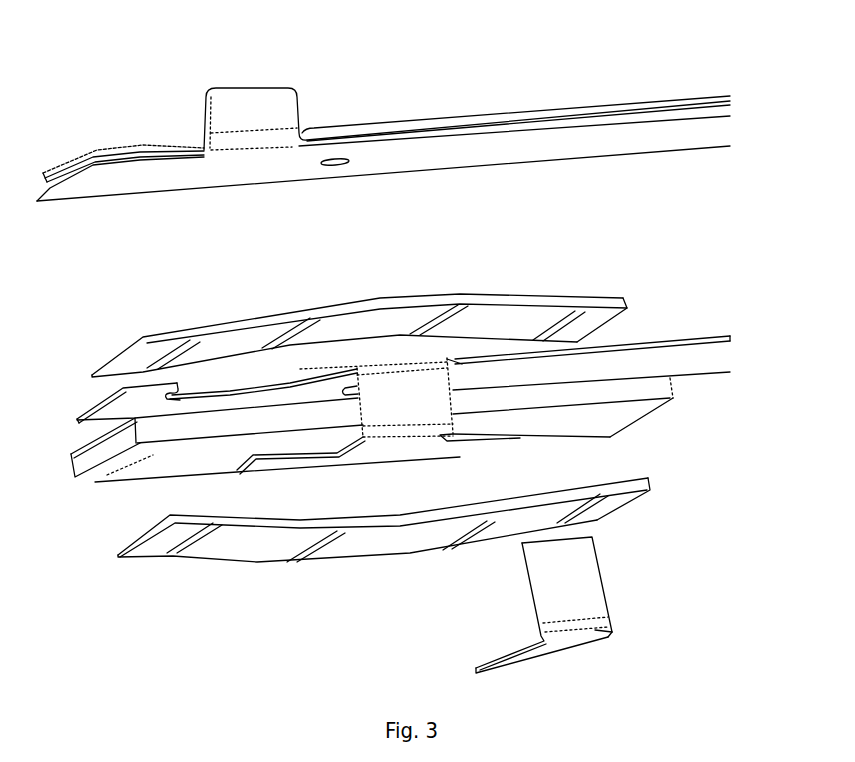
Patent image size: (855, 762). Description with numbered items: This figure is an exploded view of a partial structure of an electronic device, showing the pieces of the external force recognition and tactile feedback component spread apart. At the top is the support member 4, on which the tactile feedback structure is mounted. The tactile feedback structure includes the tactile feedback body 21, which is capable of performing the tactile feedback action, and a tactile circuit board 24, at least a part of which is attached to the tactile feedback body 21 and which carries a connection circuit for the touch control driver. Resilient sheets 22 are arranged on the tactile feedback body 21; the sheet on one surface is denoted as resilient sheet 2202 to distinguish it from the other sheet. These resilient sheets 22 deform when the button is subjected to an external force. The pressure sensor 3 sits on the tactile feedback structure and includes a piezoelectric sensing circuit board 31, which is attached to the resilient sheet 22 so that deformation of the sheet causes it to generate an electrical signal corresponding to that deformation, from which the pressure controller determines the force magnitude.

The support member 4 is at (380, 155).
The resilient sheet 22 is at (371, 451).
The resilient sheet 2202 is at (330, 304).
The tactile feedback body 21 is at (100, 479).
The tactile circuit board 24 is at (430, 448).
The pressure sensor 3 is at (496, 605).
The piezoelectric sensing circuit board 31 is at (532, 655).